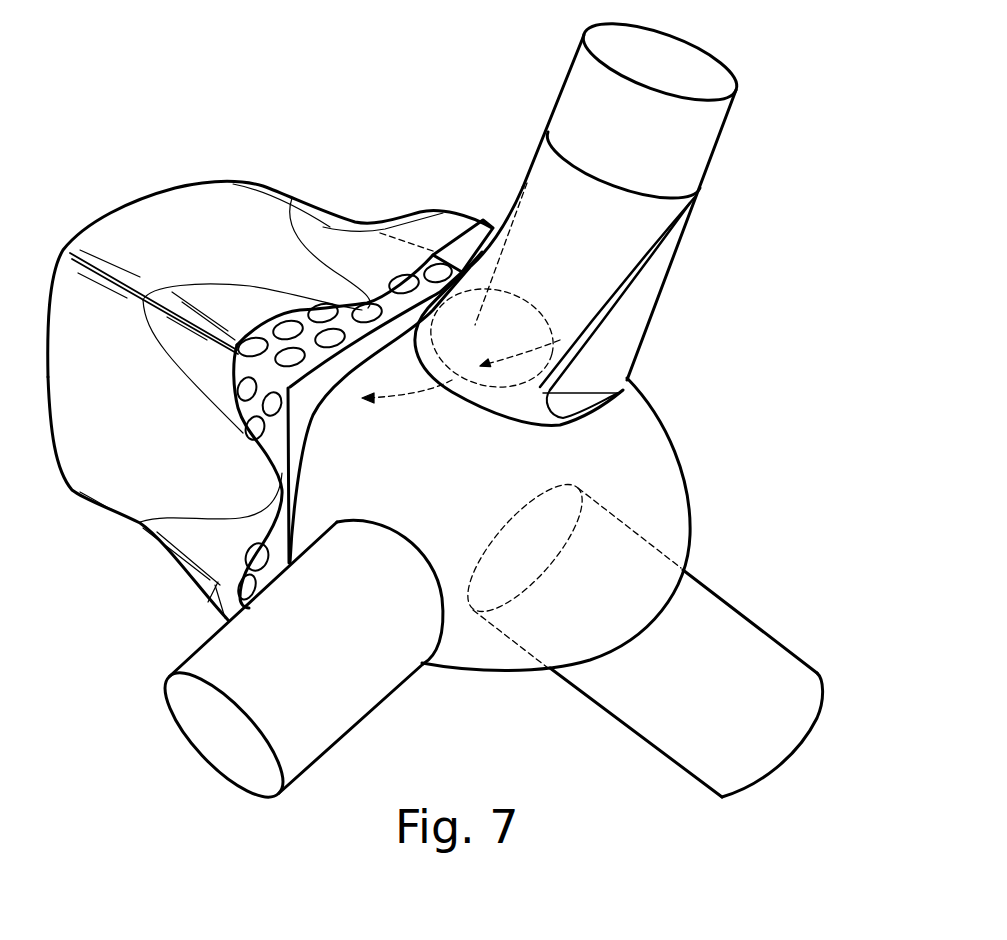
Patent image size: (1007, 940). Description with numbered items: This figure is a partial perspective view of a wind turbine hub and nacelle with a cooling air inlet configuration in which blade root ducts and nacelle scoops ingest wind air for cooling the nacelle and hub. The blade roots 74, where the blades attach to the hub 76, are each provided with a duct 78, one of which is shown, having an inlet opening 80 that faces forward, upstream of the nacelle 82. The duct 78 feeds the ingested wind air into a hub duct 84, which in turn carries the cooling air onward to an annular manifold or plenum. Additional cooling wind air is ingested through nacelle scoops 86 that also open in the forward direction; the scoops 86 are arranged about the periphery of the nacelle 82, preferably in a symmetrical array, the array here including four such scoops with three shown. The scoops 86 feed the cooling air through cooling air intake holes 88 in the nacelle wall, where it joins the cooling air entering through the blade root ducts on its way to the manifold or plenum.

The blade root 74 is at (716, 165).
The hub 76 is at (660, 502).
The duct 78 is at (535, 223).
The inlet opening 80 is at (620, 315).
The nacelle 82 is at (185, 230).
The hub duct 84 is at (450, 378).
The nacelle scoop 86 is at (237, 320).
The cooling air intake hole 88 is at (290, 353).